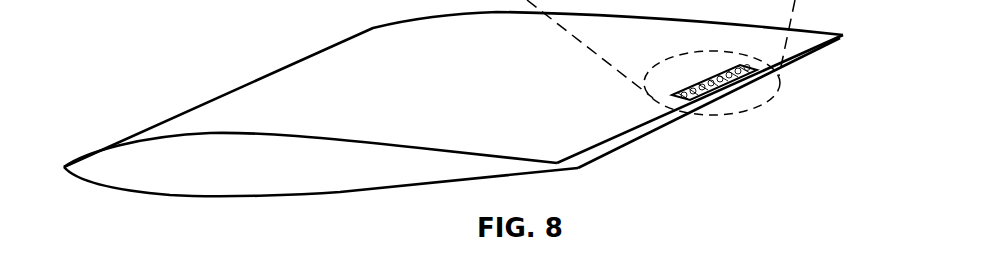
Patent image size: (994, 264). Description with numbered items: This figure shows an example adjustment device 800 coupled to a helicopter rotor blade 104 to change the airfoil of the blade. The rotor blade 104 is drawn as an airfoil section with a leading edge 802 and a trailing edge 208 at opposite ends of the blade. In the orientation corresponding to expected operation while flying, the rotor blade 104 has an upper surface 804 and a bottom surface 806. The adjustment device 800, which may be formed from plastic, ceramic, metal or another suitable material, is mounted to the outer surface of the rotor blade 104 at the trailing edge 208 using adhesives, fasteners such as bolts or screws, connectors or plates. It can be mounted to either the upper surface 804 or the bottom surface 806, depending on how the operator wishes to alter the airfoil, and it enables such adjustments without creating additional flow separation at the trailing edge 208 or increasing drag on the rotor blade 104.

The rotor blade 104 is at (453, 118).
The leading edge 802 is at (362, 35).
The upper surface 804 is at (272, 132).
The bottom surface 806 is at (260, 197).
The trailing edge 208 is at (612, 150).
The adjustment device 800 is at (721, 101).